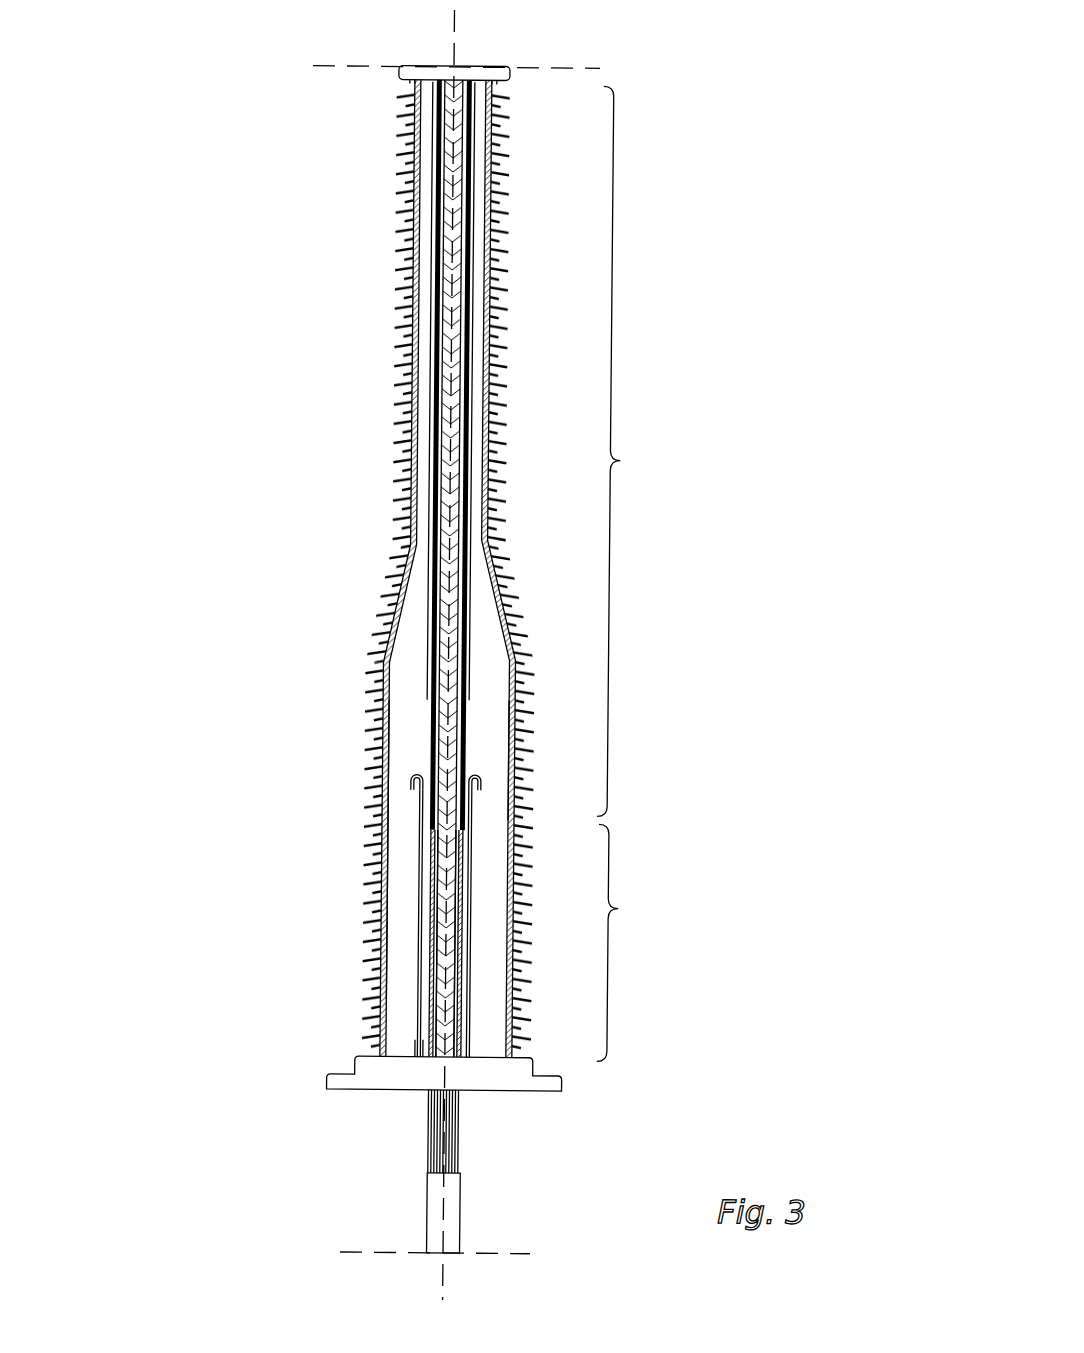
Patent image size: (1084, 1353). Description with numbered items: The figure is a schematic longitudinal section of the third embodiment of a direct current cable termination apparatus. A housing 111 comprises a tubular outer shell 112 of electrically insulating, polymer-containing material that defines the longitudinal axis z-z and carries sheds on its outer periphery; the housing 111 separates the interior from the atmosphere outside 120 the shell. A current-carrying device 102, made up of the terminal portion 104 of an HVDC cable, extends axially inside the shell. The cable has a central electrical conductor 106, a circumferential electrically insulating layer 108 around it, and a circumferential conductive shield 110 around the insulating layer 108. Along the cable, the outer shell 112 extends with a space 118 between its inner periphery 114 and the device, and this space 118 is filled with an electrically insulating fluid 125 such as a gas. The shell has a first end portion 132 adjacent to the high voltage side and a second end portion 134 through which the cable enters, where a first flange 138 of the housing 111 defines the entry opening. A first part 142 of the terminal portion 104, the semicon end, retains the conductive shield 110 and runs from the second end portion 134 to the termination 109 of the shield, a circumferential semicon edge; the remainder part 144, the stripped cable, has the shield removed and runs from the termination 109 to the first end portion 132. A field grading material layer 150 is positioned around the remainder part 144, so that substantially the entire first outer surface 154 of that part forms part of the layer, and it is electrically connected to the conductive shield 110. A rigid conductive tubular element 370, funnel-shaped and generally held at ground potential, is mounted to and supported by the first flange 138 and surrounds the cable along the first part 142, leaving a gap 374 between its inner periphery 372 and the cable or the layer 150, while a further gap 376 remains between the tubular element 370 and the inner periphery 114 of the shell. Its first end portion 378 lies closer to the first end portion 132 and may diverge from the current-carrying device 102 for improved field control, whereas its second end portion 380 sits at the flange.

The first end portion 132 is at (388, 95).
The inner periphery 114 is at (488, 218).
The housing 111 is at (385, 263).
The tubular outer shell 112 is at (399, 299).
The current-carrying device 102 is at (345, 567).
The terminal portion 104 is at (438, 373).
The field grading material layer 150 is at (436, 419).
The first outer surface 154 is at (439, 456).
The electrically insulating layer 108 is at (435, 495).
The electrical conductor 106 is at (450, 535).
The atmosphere outside 120 is at (243, 560).
The space 118 is at (425, 638).
The electrically insulating fluid 125 is at (513, 696).
The first end portion 378 is at (418, 774).
The rigid conductive tubular element 370 is at (428, 833).
The gap 374 is at (436, 863).
The gap 376 is at (409, 888).
The termination 109 is at (474, 830).
The circumferential conductive shield 110 is at (441, 948).
The inner periphery 372 is at (474, 988).
The second end portion 134 is at (362, 1041).
The second end portion 380 is at (426, 1050).
The first flange 138 is at (372, 1074).
The remainder part 144 is at (635, 451).
The first part 142 is at (634, 943).